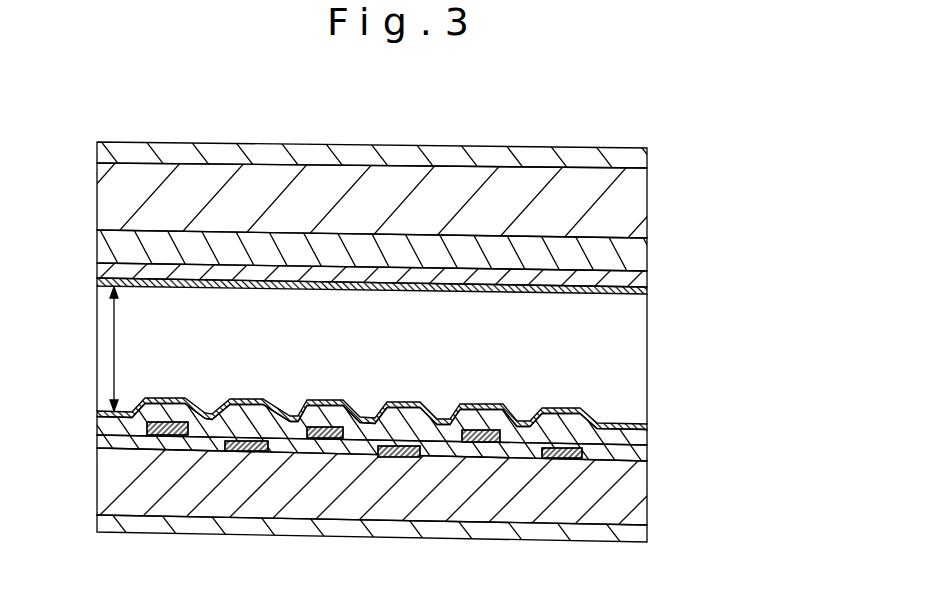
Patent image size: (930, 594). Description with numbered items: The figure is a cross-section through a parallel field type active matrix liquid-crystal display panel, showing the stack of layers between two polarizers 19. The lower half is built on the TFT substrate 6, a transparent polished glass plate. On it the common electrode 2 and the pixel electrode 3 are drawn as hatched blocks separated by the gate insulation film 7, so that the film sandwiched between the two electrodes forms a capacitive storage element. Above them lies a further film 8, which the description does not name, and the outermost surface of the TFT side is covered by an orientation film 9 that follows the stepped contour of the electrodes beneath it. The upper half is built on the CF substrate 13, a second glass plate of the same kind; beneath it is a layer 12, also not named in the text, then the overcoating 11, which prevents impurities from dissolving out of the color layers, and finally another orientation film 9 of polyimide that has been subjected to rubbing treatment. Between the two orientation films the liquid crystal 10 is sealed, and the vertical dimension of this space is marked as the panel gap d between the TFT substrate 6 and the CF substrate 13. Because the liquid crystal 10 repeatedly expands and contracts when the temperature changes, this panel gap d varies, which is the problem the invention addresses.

The polarizer 19 is at (633, 152).
The CF substrate 13 is at (636, 208).
The color filter 12 is at (636, 250).
The overcoating 11 is at (640, 278).
The orientation film 9 is at (640, 292).
The liquid crystal 10 is at (627, 362).
The insulating film 8 is at (645, 437).
The gate insulation film 7 is at (645, 455).
The TFT substrate 6 is at (633, 500).
The pixel electrode 3 is at (310, 452).
The common electrode 2 is at (245, 453).
The panel gap d is at (113, 340).